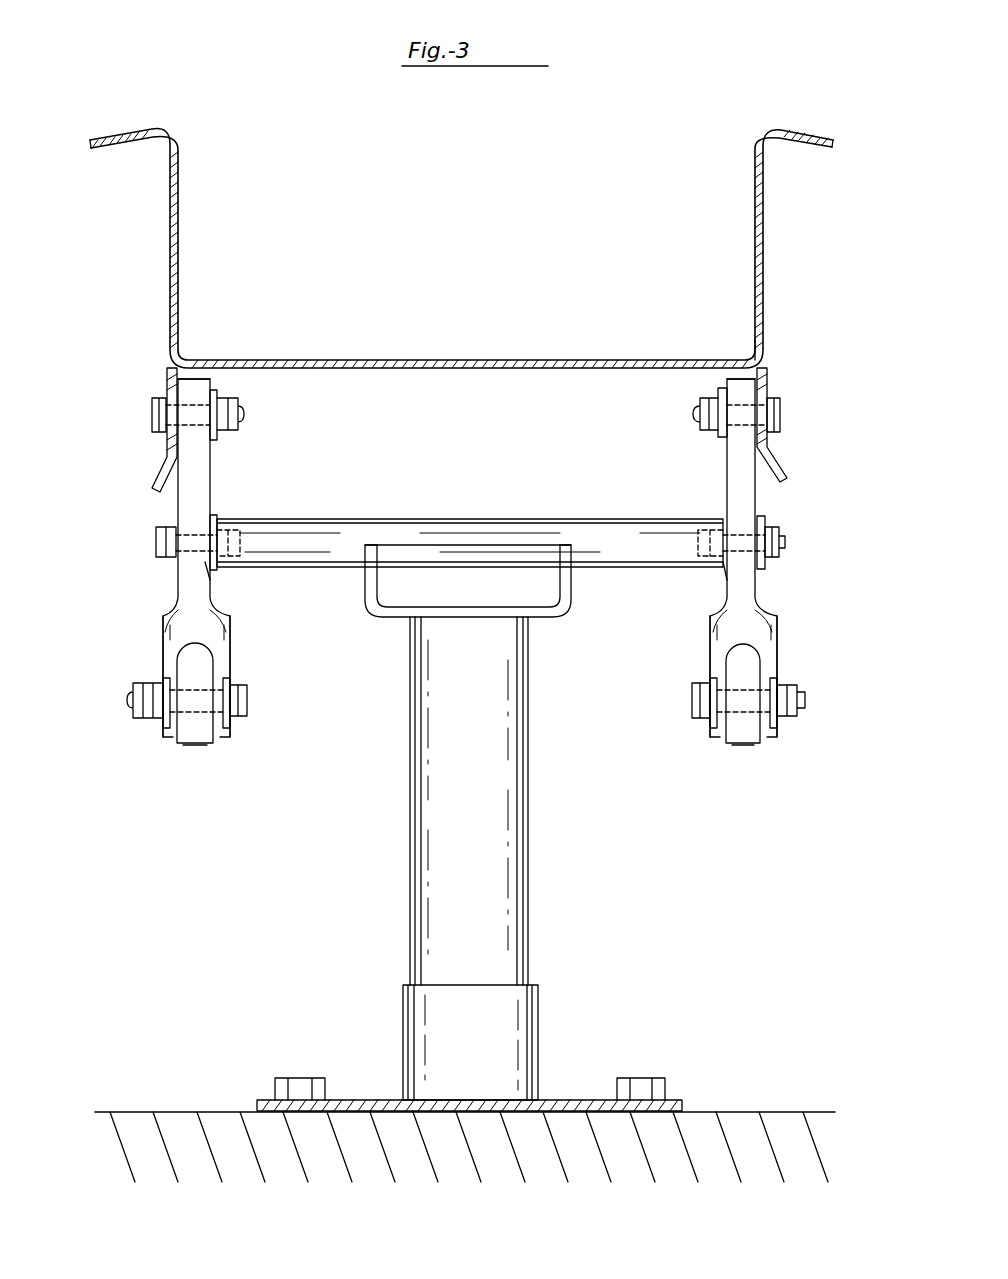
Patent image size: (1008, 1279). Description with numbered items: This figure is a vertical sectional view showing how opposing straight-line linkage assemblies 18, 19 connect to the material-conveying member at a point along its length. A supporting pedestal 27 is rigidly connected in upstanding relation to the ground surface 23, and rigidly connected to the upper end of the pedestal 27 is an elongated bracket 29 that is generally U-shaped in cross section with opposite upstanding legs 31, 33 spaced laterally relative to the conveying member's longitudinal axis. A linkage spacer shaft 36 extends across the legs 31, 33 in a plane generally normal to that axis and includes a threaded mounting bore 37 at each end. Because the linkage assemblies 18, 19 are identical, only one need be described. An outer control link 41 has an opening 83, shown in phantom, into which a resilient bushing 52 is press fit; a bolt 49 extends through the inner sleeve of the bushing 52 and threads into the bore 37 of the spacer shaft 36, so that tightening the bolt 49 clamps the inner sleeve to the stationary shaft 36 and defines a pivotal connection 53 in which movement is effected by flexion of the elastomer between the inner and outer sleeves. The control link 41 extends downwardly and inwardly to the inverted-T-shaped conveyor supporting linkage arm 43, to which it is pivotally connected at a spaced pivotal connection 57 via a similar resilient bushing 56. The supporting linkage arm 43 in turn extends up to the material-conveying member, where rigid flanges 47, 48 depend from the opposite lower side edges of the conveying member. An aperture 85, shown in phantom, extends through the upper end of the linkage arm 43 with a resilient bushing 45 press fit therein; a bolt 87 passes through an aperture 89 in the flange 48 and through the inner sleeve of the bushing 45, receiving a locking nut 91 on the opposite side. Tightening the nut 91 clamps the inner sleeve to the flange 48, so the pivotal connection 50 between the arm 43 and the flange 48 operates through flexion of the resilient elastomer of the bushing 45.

The straight-line linkage assembly 18 is at (770, 599).
The straight-line linkage assembly 19 is at (160, 596).
The ground surface 23 is at (718, 1110).
The supporting pedestal 27 is at (528, 942).
The elongated bracket 29 is at (538, 618).
The upstanding leg 31 is at (366, 585).
The upstanding leg 33 is at (570, 585).
The linkage spacer shaft 36 is at (338, 519).
The threaded mounting bore 37 is at (230, 517).
The outer control link 41 is at (203, 635).
The conveyor supporting linkage arm 43 is at (196, 742).
The resilient bushing 45 is at (214, 440).
The rigid flange 47 is at (778, 463).
The rigid flange 48 is at (162, 462).
The bolt 49 is at (780, 533).
The pivotal connection 50 is at (143, 408).
The resilient bushing 52 is at (206, 566).
The pivotal connection 53 is at (150, 549).
The resilient bushing 56 is at (178, 742).
The pivotal connection 57 is at (128, 714).
The opening 83 is at (192, 517).
The aperture 85 is at (175, 358).
The bolt 87 is at (240, 414).
The aperture 89 is at (770, 372).
The locking nut 91 is at (225, 405).